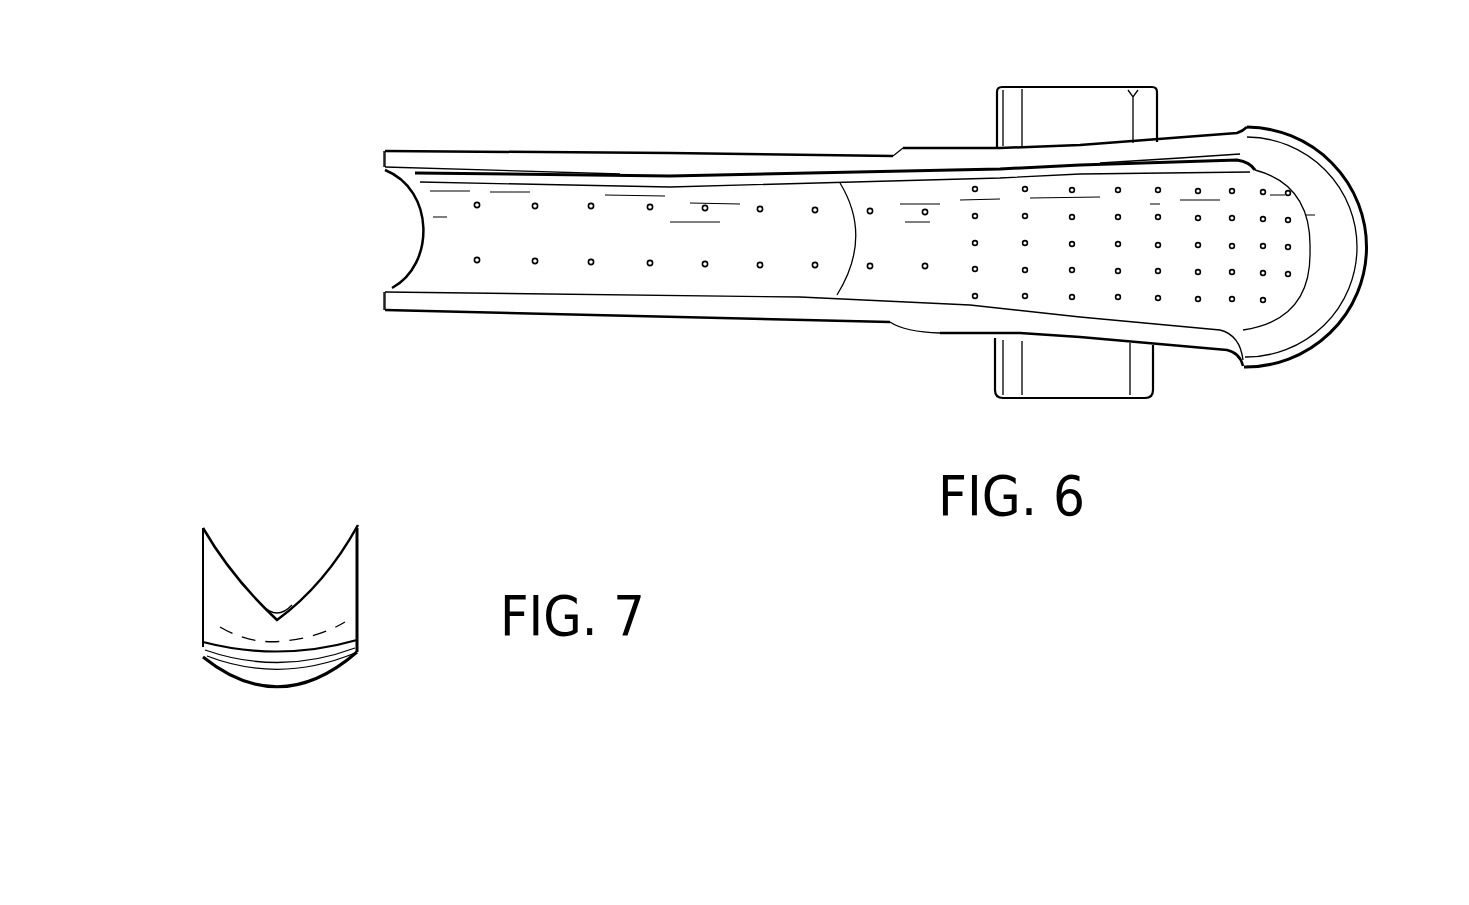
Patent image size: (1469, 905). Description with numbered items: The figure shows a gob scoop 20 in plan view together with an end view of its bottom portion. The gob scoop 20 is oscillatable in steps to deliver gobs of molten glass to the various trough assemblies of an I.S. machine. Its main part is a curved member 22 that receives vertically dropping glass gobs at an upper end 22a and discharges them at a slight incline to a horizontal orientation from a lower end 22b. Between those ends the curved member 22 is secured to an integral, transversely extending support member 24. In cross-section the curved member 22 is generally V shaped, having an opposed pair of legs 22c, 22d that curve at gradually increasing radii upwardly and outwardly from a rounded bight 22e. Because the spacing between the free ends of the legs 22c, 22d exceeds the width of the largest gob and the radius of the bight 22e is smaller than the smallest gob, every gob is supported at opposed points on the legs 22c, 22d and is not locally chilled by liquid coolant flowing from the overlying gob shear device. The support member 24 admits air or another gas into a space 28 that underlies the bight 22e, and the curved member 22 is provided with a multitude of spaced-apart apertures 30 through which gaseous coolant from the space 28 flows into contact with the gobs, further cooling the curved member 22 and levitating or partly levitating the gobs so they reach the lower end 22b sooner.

In FIG. 6, the gob scoop 20 is at (737, 110).
In FIG. 6, the curved member 22 is at (620, 152).
In FIG. 7, the curved member 22 is at (358, 617).
In FIG. 6, the upper end 22a is at (1357, 197).
In FIG. 6, the lower end 22b is at (385, 168).
In FIG. 6, the leg 22c is at (482, 152).
In FIG. 7, the leg 22c is at (203, 528).
In FIG. 6, the leg 22d is at (524, 313).
In FIG. 7, the leg 22d is at (358, 527).
In FIG. 7, the rounded bight 22e is at (275, 613).
In FIG. 6, the support member 24 is at (1157, 87).
In FIG. 7, the space 28 is at (287, 651).
In FIG. 6, the apertures 30 is at (815, 208).